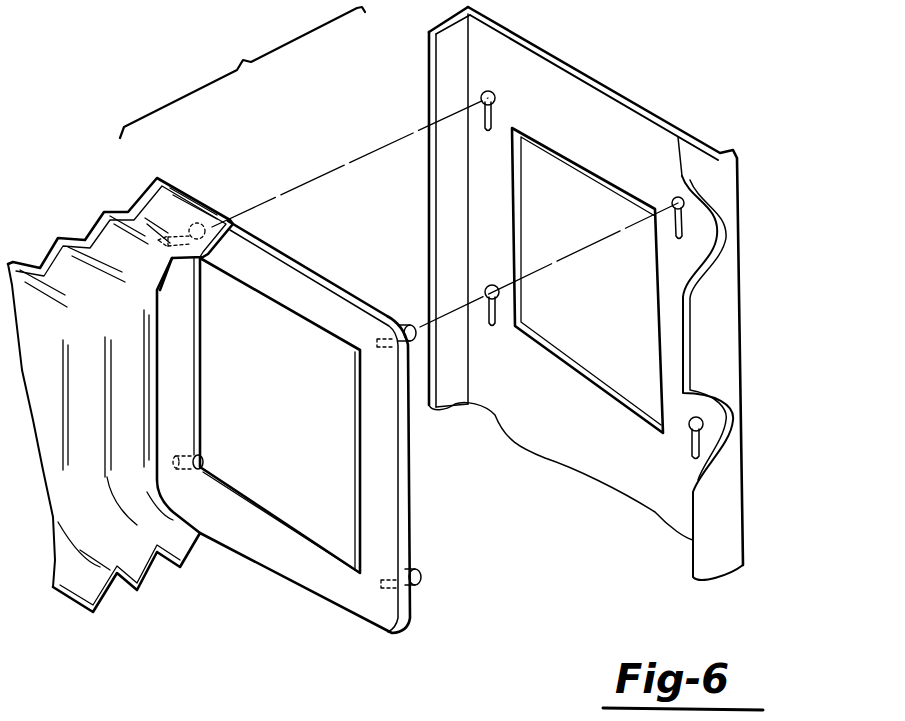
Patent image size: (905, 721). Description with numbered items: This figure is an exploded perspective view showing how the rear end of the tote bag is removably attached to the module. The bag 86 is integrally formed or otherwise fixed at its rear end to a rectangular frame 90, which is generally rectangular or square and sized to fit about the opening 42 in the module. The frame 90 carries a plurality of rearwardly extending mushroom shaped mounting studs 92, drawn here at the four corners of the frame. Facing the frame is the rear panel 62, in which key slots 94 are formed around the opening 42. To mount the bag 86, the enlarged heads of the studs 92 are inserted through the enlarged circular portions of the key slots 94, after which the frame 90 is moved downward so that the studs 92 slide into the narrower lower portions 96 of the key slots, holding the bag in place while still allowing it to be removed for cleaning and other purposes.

The opening 42 is at (633, 283).
The rear panel 62 is at (637, 103).
The bag 86 is at (58, 237).
The rectangular frame 90 is at (293, 287).
The mushroom shaped mounting studs 92 is at (205, 188).
The key slots 94 is at (491, 97).
The narrower lower portions 96 is at (490, 131).